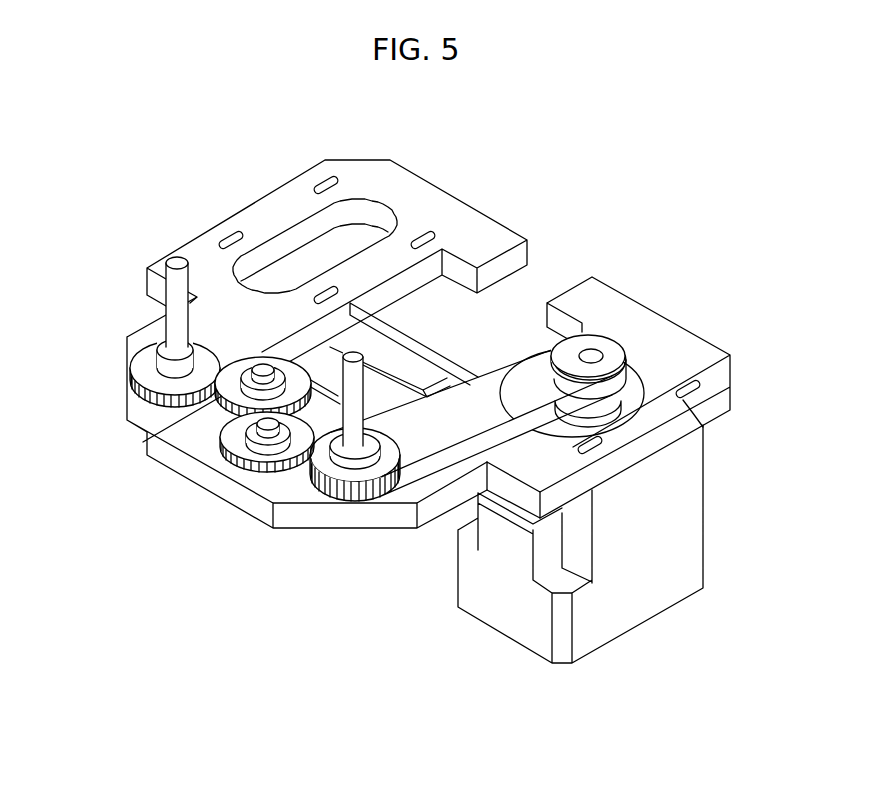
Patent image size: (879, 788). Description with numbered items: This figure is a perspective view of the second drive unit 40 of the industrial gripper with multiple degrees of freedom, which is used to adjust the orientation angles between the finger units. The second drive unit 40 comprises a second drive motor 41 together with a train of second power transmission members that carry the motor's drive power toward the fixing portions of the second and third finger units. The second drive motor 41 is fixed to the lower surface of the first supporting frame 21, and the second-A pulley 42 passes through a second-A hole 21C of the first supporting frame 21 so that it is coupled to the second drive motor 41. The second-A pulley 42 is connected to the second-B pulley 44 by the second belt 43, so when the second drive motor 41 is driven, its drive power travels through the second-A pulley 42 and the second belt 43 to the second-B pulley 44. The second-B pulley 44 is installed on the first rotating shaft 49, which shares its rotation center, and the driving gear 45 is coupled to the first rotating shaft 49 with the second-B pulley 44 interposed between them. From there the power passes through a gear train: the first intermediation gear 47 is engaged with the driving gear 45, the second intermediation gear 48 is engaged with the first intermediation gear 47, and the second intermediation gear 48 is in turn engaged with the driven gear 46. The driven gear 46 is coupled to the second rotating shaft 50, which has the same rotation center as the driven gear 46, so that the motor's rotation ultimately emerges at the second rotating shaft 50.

The first supporting frame 21 is at (715, 350).
The second-A hole 21C is at (703, 427).
The second drive unit 40 is at (636, 633).
The second drive motor 41 is at (696, 546).
The second-A pulley 42 is at (608, 348).
The second belt 43 is at (425, 454).
The second-B pulley 44 is at (268, 518).
The driving gear 45 is at (332, 472).
The driven gear 46 is at (128, 378).
The first intermediation gear 47 is at (240, 425).
The second intermediation gear 48 is at (222, 432).
The first rotating shaft 49 is at (372, 368).
The second rotating shaft 50 is at (166, 294).